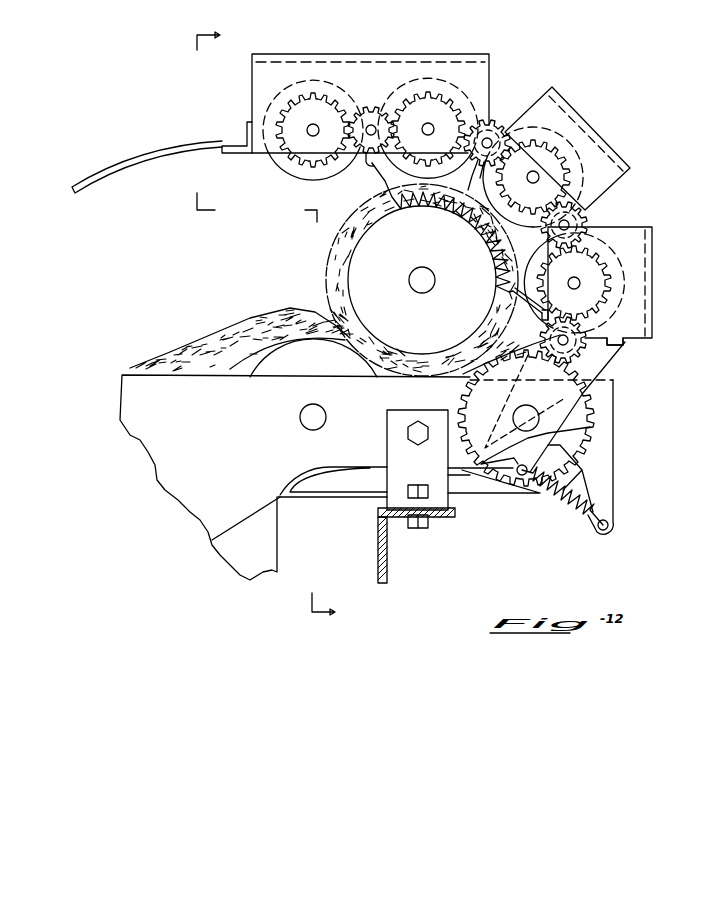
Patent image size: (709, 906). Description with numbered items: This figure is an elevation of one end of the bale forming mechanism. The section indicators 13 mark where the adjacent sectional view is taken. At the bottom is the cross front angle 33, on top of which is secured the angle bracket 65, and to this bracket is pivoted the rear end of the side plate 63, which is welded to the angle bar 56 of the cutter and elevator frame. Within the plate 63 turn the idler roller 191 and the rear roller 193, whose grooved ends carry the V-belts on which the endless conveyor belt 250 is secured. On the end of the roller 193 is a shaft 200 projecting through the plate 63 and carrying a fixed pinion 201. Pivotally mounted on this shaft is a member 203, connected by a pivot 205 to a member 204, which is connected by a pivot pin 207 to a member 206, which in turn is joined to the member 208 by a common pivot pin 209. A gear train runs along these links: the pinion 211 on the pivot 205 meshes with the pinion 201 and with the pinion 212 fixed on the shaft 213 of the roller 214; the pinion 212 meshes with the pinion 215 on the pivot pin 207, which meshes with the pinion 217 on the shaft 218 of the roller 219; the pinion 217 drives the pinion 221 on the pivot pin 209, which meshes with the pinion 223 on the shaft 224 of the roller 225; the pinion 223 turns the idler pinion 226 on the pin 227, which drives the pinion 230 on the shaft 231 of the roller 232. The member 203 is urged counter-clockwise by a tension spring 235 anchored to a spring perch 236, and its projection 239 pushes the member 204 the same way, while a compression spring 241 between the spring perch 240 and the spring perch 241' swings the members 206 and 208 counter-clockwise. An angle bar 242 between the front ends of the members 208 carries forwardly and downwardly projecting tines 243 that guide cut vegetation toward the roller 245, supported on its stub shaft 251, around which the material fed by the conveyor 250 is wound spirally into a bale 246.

The section line of FIG. 13 is at (253, 325).
The cross front angle 33 is at (387, 563).
The angle bar 56 is at (230, 548).
The plate 63 is at (142, 440).
The angle bracket 65 is at (417, 469).
The roller 191 is at (302, 363).
The roller 193 is at (510, 483).
The shaft 200 is at (532, 402).
The pinion 201 is at (582, 427).
The member 203 is at (617, 370).
The member 204 is at (652, 292).
The pivot 205 is at (566, 343).
The member 206 is at (598, 128).
The pivot pin 207 is at (552, 232).
The member 208 is at (420, 54).
The pivot pin 209 is at (488, 138).
The pinion 211 is at (597, 333).
The pinion 212 is at (600, 263).
The shaft 213 is at (574, 289).
The roller 214 is at (532, 271).
The pinion 215 is at (588, 218).
The pinion 217 is at (560, 180).
The shaft 218 is at (530, 182).
The roller 219 is at (527, 177).
The pinion 221 is at (480, 160).
The pinion 223 is at (443, 103).
The shaft 224 is at (428, 123).
The roller 225 is at (420, 170).
The idler pinion 226 is at (383, 108).
The pin 227 is at (370, 125).
The pinion 230 is at (293, 103).
The shaft 231 is at (314, 136).
The roller 232 is at (312, 173).
The tension spring 235 is at (572, 513).
The spring perch 236 is at (610, 515).
The projection 239 is at (623, 343).
The spring perch 240 is at (543, 322).
The compression spring 241 is at (458, 238).
The spring perch 241' is at (357, 171).
The angle bar 242 is at (247, 128).
The tine 243 is at (167, 147).
The roller 245 is at (357, 283).
The bale 246 is at (330, 243).
The endless conveyor belt 250 is at (357, 497).
The stub shaft 251 is at (422, 293).